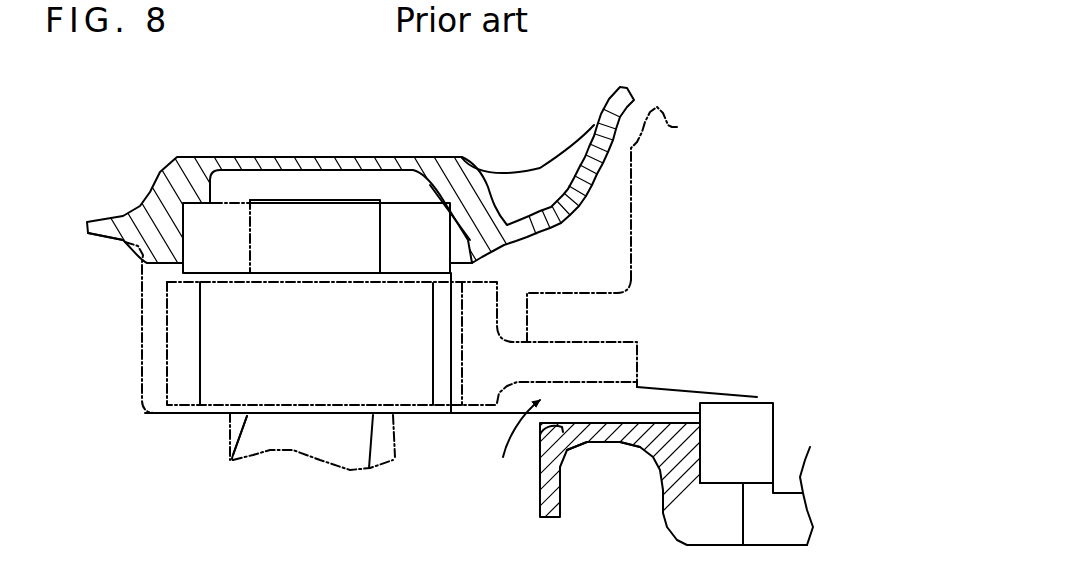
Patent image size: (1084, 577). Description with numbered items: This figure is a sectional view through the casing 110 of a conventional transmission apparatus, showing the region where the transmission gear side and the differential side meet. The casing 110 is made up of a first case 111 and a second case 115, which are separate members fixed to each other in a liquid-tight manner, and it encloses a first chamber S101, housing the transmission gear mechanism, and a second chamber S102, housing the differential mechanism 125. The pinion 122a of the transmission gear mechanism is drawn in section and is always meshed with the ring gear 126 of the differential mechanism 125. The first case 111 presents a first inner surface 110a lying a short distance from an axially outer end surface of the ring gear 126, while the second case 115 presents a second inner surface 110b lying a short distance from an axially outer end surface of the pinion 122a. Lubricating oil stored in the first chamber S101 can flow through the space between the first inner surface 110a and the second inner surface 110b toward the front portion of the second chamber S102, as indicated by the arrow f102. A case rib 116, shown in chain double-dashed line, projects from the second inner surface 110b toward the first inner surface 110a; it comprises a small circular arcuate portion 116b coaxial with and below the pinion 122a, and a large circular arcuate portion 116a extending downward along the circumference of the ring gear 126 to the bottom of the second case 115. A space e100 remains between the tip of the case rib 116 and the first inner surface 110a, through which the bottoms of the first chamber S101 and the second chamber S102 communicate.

The casing 110 is at (188, 136).
The first inner surface 110a is at (667, 418).
The second inner surface 110b is at (170, 265).
The first case 111 is at (670, 504).
The second case 115 is at (458, 177).
The case rib 116 is at (375, 418).
The large circular arcuate portion 116a is at (627, 442).
The small circular arcuate portion 116b is at (233, 440).
The pinion 122a is at (423, 273).
The differential mechanism 125 is at (630, 198).
The ring gear 126 is at (481, 283).
The space e100 is at (555, 423).
The arrow f102 is at (508, 434).
The first chamber S101 is at (455, 510).
The second chamber S102 is at (755, 255).